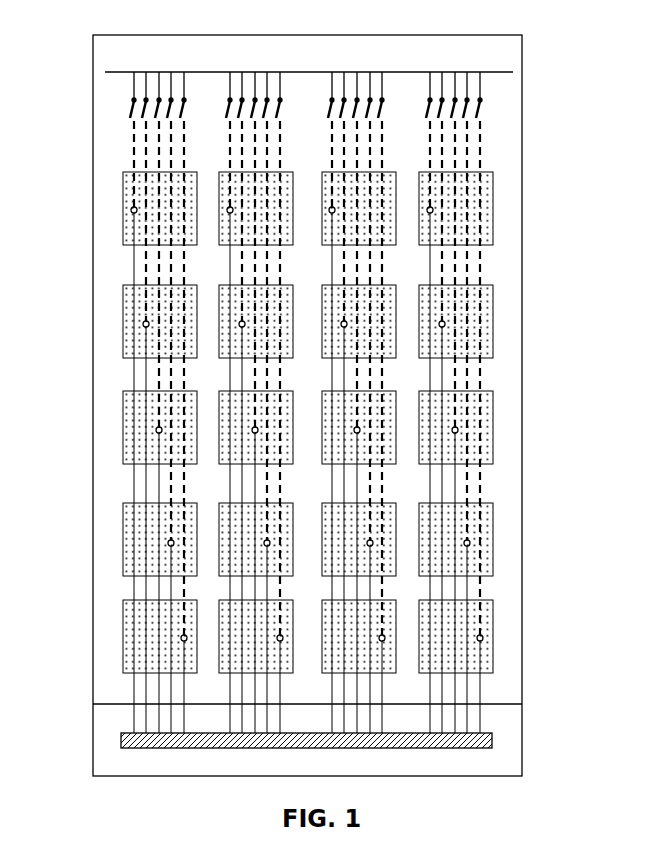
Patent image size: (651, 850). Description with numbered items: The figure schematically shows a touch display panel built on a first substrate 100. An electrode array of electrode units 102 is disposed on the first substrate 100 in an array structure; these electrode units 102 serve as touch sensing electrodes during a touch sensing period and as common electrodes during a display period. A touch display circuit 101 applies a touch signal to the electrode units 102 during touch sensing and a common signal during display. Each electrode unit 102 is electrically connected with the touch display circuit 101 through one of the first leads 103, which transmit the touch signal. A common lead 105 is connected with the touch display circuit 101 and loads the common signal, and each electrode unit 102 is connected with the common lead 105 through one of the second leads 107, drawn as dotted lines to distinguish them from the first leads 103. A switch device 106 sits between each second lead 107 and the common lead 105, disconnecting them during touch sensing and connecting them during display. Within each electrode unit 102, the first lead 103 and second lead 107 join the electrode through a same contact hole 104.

The first substrate 100 is at (523, 469).
The touch display circuit 101 is at (492, 739).
The electrode unit 102 is at (123, 228).
The first lead 103 is at (134, 721).
The contact hole 104 is at (159, 430).
The common lead 105 is at (207, 72).
The switch device 106 is at (480, 108).
The second lead 107 is at (483, 278).